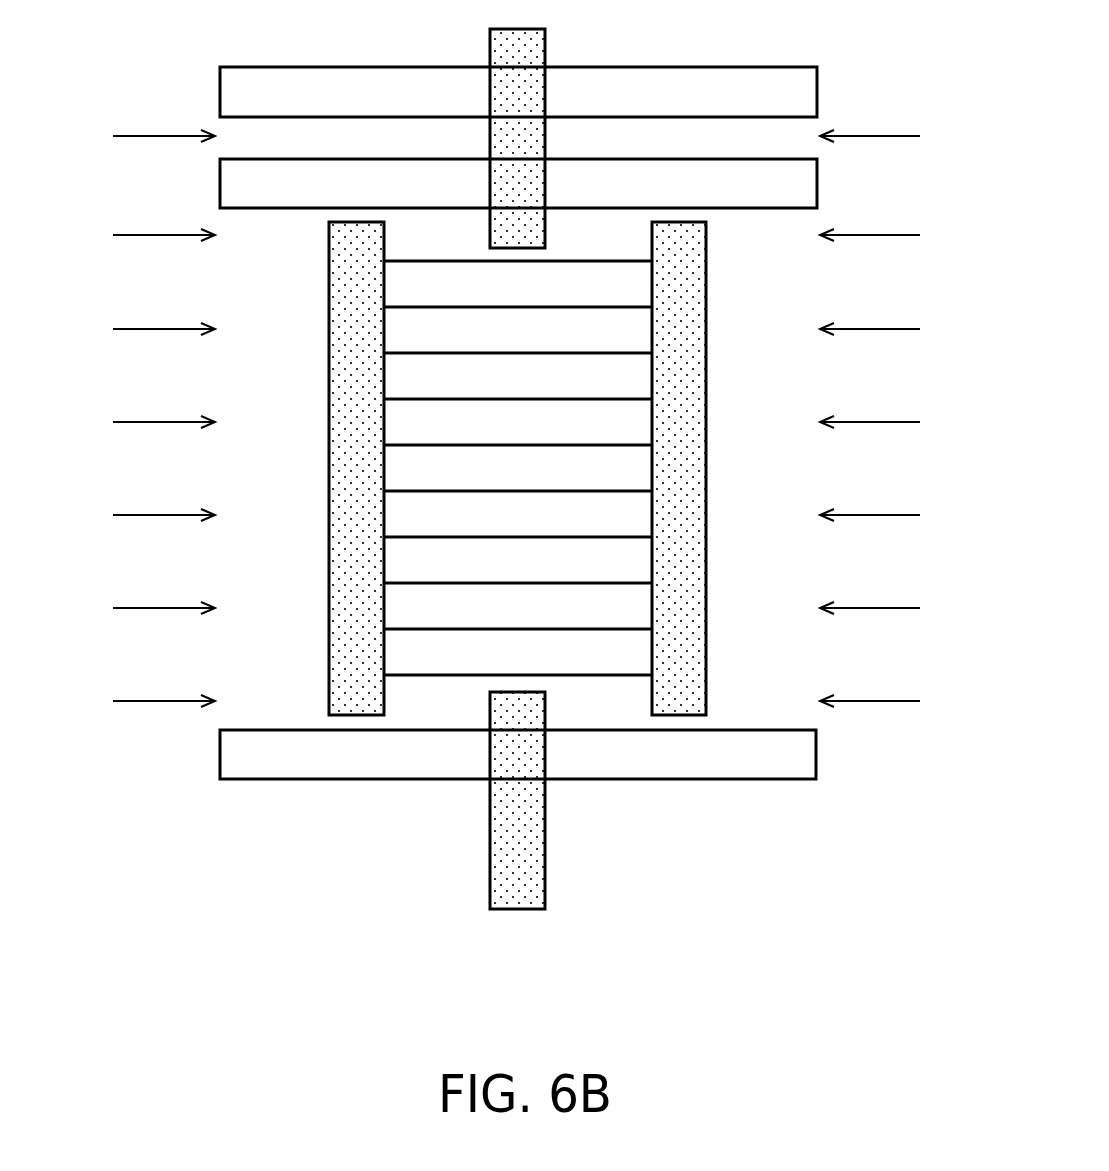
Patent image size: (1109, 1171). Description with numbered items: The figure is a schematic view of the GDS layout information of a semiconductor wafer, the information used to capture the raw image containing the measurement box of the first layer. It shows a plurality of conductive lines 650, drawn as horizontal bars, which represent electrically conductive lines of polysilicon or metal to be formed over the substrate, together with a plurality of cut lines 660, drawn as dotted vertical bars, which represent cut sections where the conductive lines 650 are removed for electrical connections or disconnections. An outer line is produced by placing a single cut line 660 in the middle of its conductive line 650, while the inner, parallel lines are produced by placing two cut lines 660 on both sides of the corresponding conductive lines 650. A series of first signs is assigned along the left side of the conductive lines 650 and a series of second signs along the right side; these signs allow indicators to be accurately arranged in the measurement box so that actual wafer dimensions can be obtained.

The conductive lines 650 is at (677, 780).
The cut lines 660 is at (517, 910).